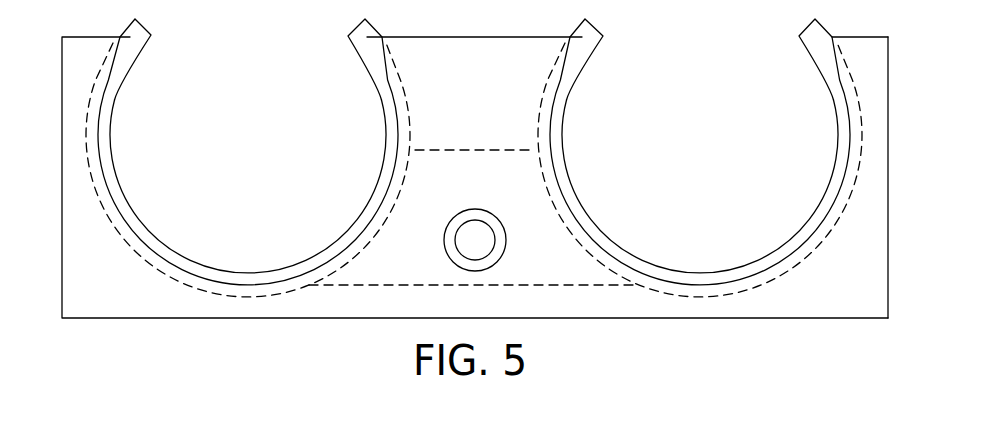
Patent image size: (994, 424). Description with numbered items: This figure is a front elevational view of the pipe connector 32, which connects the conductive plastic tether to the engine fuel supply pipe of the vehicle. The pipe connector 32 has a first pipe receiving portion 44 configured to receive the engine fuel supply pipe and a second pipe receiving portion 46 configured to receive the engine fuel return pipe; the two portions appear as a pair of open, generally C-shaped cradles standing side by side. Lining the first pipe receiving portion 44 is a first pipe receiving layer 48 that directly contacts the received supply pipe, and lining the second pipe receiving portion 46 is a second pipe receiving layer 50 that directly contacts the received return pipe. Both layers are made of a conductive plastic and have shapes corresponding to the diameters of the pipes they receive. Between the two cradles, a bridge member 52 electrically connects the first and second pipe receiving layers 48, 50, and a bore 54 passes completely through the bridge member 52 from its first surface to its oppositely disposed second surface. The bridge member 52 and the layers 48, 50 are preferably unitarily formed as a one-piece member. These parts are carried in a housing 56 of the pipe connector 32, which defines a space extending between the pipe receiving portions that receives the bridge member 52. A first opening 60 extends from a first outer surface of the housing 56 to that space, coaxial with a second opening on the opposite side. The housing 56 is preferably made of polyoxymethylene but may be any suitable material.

The pipe connector 32 is at (55, 281).
The first pipe receiving portion 44 is at (160, 229).
The second pipe receiving portion 46 is at (794, 229).
The first pipe receiving layer 48 is at (270, 272).
The second pipe receiving layer 50 is at (680, 272).
The bridge member 52 is at (477, 148).
The bore 54 is at (495, 243).
The housing 56 is at (895, 282).
The first opening 60 is at (448, 224).